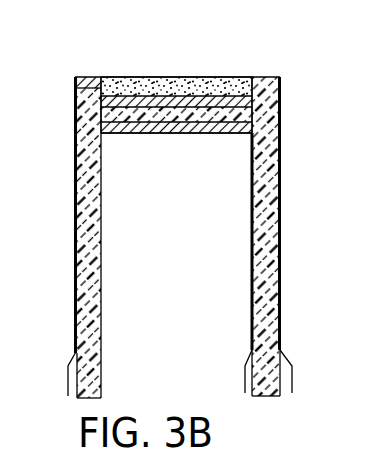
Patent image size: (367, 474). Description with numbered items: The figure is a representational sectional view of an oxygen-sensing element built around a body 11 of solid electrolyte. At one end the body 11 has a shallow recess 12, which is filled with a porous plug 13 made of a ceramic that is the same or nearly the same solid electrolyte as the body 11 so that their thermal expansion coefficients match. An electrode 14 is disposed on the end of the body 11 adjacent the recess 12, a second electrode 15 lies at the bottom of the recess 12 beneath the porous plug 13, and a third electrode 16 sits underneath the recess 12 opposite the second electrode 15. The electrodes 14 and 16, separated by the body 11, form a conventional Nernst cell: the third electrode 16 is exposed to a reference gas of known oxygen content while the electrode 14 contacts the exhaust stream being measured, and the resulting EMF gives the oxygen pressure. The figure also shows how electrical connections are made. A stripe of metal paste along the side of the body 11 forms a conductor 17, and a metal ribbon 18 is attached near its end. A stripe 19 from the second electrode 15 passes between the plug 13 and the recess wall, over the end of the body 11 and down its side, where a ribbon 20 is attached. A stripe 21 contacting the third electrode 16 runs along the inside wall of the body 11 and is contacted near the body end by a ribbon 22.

The body 11 is at (270, 176).
The recess 12 is at (177, 52).
The porous plug 13 is at (139, 76).
The electrode 14 is at (75, 77).
The second electrode 15 is at (230, 90).
The third electrode 16 is at (164, 133).
The conductor 17 is at (77, 231).
The metal ribbon 18 is at (68, 380).
The stripe 19 is at (281, 218).
The ribbon 20 is at (293, 372).
The stripe 21 is at (252, 219).
The ribbon 22 is at (244, 368).